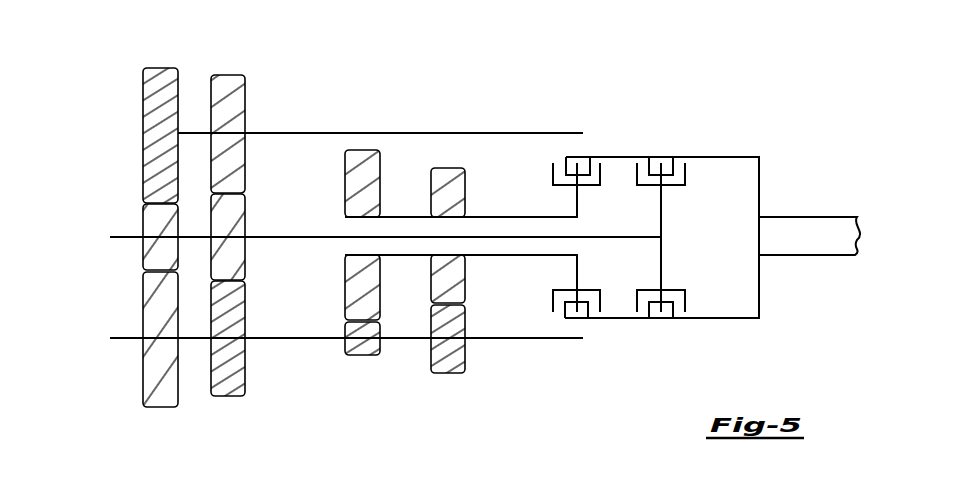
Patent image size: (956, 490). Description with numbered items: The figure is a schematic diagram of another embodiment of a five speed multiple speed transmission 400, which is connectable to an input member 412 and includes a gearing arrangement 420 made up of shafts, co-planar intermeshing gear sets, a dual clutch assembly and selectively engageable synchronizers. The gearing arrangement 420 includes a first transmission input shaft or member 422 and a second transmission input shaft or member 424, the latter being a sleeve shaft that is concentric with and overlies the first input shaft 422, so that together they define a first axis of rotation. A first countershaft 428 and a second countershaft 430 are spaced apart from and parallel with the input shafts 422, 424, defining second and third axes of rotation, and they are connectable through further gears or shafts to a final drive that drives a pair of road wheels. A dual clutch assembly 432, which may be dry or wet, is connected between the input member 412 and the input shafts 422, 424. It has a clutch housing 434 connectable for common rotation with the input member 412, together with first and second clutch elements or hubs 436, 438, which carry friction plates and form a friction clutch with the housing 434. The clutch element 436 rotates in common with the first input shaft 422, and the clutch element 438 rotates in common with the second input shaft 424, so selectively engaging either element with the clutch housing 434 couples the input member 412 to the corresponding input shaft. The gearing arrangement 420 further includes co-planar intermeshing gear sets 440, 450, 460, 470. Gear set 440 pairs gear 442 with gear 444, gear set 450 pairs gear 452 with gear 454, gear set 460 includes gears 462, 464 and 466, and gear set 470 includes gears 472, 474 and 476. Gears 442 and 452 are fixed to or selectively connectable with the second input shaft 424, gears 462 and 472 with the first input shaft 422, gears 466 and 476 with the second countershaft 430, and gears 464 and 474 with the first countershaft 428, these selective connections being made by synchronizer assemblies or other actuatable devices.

The multiple speed transmission 400 is at (618, 82).
The input member 412 is at (812, 217).
The gearing arrangement 420 is at (128, 50).
The first transmission input shaft 422 is at (503, 238).
The second transmission input shaft 424 is at (538, 216).
The first countershaft 428 is at (554, 340).
The second countershaft 430 is at (539, 132).
The dual clutch assembly 432 is at (740, 123).
The clutch housing 434 is at (762, 308).
The first clutch element 436 is at (664, 262).
The second clutch element 438 is at (578, 272).
The co-planar gear set 440 is at (470, 375).
The gear 442 is at (450, 170).
The gear 444 is at (447, 375).
The co-planar gear set 450 is at (385, 355).
The gear 452 is at (363, 152).
The gear 454 is at (361, 357).
The co-planar gear set 460 is at (247, 400).
The gear 462 is at (246, 256).
The gear 464 is at (228, 396).
The gear 466 is at (228, 75).
The co-planar gear set 470 is at (185, 410).
The gear 472 is at (143, 222).
The gear 474 is at (160, 407).
The gear 476 is at (162, 68).